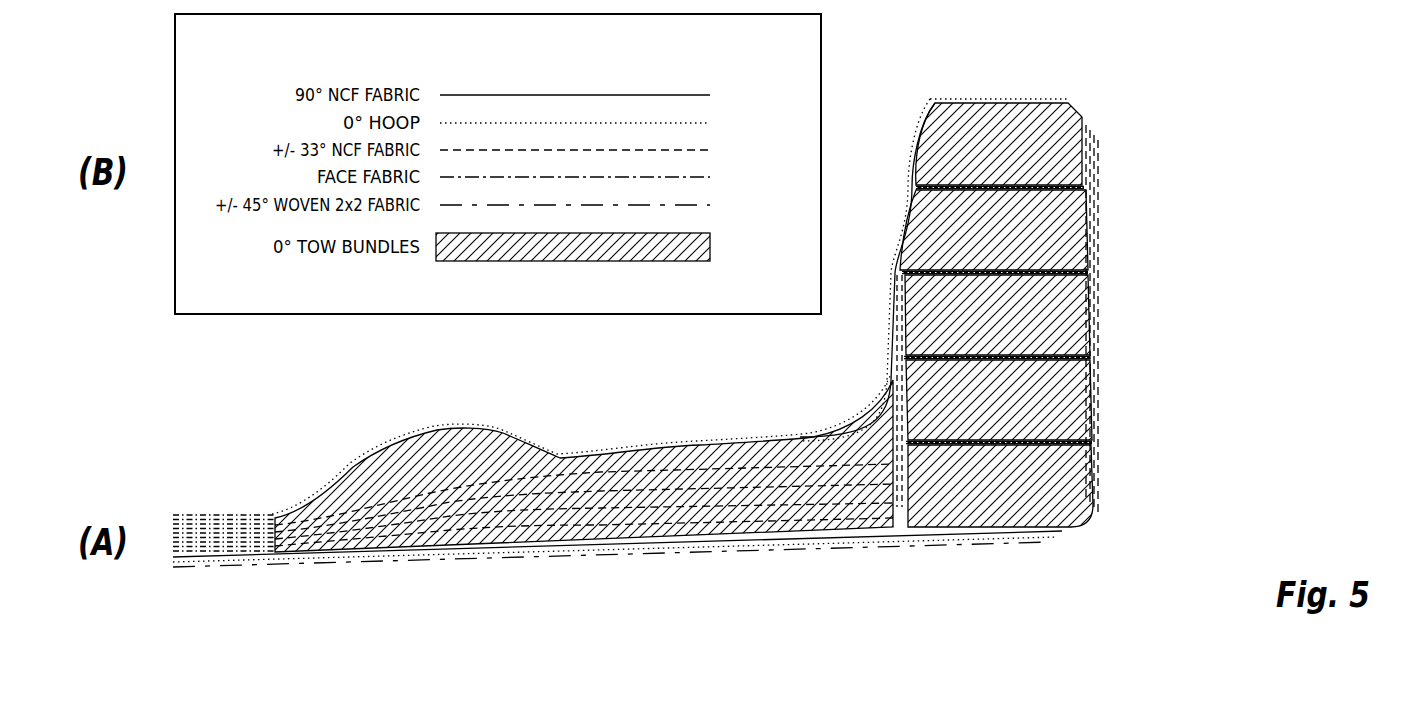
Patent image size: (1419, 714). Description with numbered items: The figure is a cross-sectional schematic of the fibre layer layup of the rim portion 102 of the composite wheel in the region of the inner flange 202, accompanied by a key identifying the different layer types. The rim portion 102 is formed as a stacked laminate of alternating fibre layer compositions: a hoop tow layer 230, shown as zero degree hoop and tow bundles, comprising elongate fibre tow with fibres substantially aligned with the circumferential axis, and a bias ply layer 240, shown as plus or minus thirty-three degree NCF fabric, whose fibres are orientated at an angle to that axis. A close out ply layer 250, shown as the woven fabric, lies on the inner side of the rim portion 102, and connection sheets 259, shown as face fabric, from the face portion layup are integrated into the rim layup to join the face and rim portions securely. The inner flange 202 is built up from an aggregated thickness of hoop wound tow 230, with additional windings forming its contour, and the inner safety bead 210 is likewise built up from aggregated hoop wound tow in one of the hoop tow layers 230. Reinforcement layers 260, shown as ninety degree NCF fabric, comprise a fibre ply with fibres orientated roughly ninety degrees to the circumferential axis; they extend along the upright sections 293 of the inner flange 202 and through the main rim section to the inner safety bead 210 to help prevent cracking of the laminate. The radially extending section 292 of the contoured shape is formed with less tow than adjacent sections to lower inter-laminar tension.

The rim portion 102 is at (281, 426).
The inner flange 202 is at (1022, 103).
The inner safety bead 210 is at (447, 426).
The hoop tow layer 230 is at (710, 123).
The bias ply layer 240 is at (710, 150).
The close out ply layer 250 is at (710, 205).
The connection sheets 259 is at (710, 177).
The reinforcement layers 260 is at (710, 95).
The radially extending section 292 is at (876, 246).
The upright sections 293 is at (873, 304).